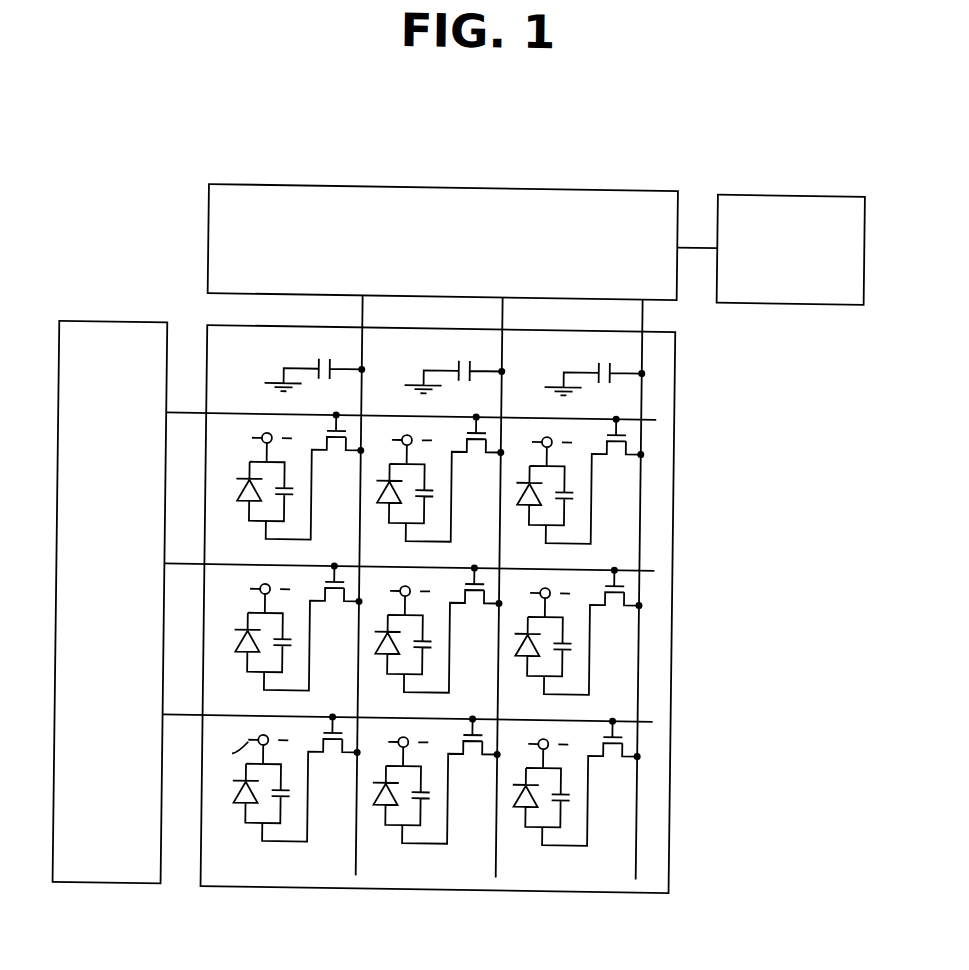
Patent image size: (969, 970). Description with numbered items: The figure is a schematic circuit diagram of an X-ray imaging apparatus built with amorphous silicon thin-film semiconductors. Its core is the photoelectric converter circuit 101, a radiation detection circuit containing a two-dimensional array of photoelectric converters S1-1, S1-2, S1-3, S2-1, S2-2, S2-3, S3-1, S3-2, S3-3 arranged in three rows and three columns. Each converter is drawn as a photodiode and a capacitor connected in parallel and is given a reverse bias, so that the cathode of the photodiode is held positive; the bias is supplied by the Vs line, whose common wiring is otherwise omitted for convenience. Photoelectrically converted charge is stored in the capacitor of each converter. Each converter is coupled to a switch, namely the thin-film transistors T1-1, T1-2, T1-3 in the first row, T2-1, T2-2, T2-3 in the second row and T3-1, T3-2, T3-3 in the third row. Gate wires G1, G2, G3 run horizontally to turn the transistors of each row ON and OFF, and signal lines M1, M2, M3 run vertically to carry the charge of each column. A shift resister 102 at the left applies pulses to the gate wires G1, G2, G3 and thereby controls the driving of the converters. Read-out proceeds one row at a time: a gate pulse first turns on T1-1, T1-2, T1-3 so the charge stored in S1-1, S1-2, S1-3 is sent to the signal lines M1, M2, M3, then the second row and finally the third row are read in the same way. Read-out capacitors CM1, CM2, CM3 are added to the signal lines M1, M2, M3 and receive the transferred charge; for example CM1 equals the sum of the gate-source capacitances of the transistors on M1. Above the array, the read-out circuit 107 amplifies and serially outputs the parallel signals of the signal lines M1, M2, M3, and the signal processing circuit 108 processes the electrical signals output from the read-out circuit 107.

The photoelectric converter circuit 101 is at (444, 889).
The shift resister 102 is at (109, 326).
The read-out circuit 107 is at (445, 187).
The signal processing circuit 108 is at (788, 190).
The signal line M1 is at (375, 585).
The signal line M2 is at (515, 587).
The signal line M3 is at (655, 590).
The gate wire G1 is at (411, 402).
The gate wire G2 is at (409, 553).
The gate wire G3 is at (408, 704).
The read-out capacitor CM1 is at (314, 363).
The read-out capacitor CM2 is at (454, 365).
The read-out capacitor CM3 is at (594, 367).
The switch (TFT) T1-1 is at (315, 475).
The switch (TFT) T1-2 is at (455, 478).
The switch (TFT) T1-3 is at (595, 480).
The switch (TFT) T2-1 is at (313, 626).
The switch (TFT) T2-2 is at (453, 629).
The switch (TFT) T2-3 is at (593, 631).
The switch (TFT) T3-1 is at (311, 777).
The switch (TFT) T3-2 is at (451, 780).
The switch (TFT) T3-3 is at (591, 782).
The photoelectric converter S1-1 is at (259, 489).
The photoelectric converter S1-2 is at (399, 491).
The photoelectric converter S1-3 is at (539, 494).
The photoelectric converter S2-1 is at (257, 640).
The photoelectric converter S2-2 is at (397, 642).
The photoelectric converter S2-3 is at (537, 645).
The photoelectric converter S3-1 is at (255, 791).
The photoelectric converter S3-2 is at (395, 793).
The photoelectric converter S3-3 is at (535, 796).
The Vs line Vs is at (228, 752).